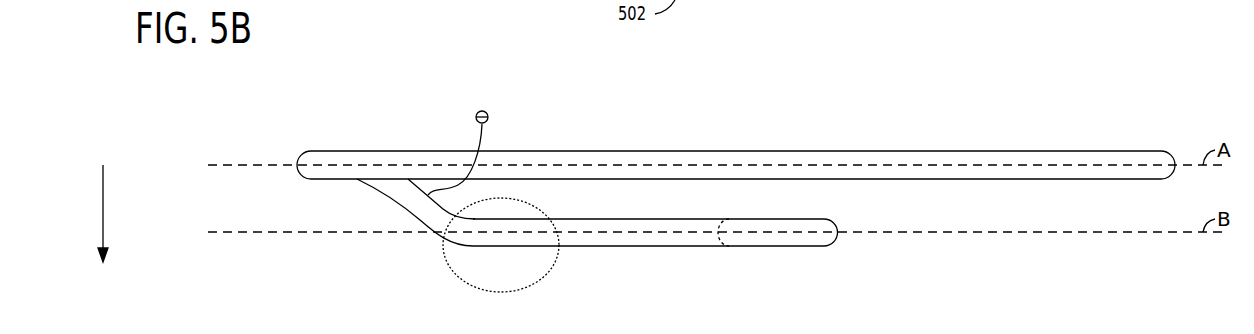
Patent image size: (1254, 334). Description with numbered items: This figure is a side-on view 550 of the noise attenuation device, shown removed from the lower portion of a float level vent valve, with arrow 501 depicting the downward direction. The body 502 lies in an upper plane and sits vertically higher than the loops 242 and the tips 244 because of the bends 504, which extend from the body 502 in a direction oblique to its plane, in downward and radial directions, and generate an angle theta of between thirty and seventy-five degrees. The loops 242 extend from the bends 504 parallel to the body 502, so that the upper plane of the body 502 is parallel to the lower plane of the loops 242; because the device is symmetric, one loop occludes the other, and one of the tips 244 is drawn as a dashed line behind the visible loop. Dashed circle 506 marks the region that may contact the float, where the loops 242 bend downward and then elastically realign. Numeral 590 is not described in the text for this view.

The side-on view 550 is at (302, 95).
The arrow 501 is at (103, 180).
The body 502 is at (1038, 151).
The bends 504 is at (368, 187).
The dashed circle 506 is at (546, 217).
The loops 242 is at (627, 247).
The tips 244 is at (724, 236).
The element of preceding figure 590 is at (837, 0).